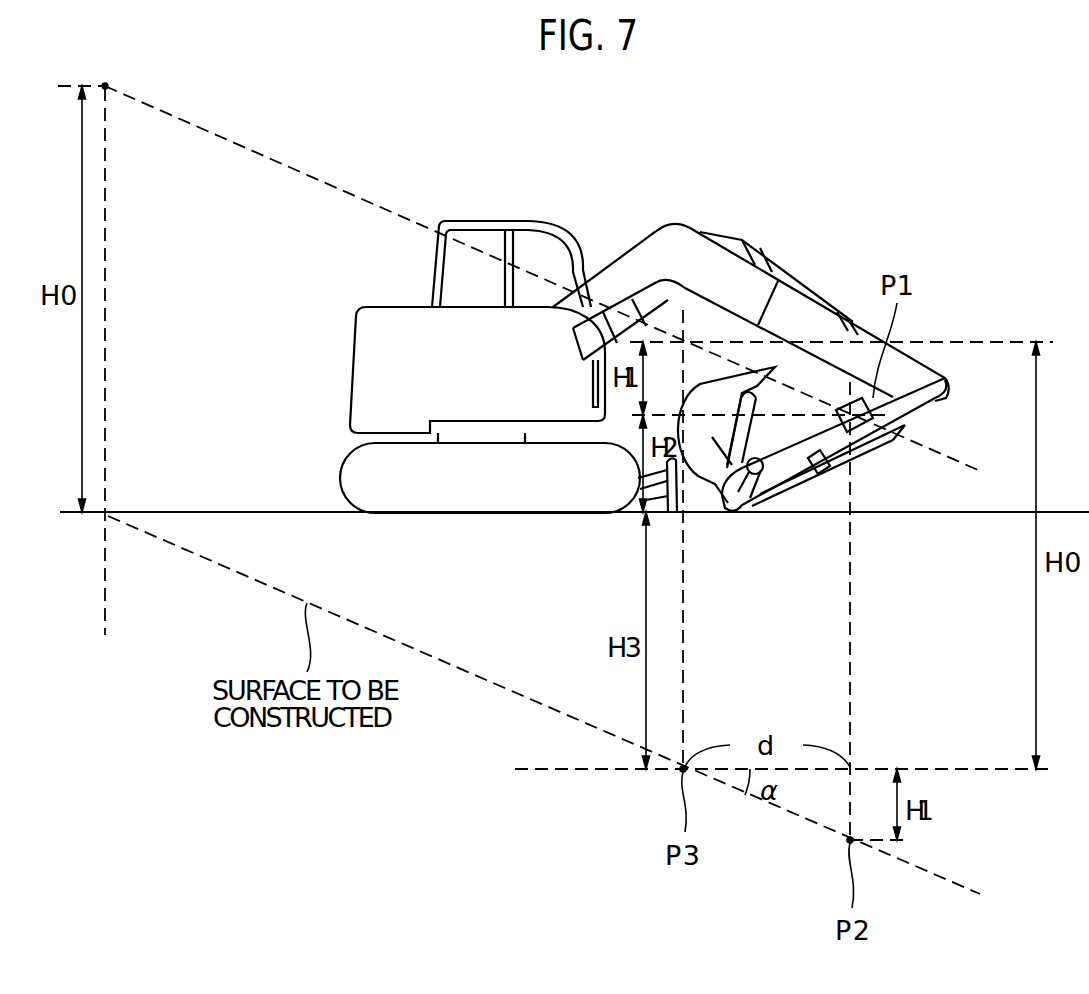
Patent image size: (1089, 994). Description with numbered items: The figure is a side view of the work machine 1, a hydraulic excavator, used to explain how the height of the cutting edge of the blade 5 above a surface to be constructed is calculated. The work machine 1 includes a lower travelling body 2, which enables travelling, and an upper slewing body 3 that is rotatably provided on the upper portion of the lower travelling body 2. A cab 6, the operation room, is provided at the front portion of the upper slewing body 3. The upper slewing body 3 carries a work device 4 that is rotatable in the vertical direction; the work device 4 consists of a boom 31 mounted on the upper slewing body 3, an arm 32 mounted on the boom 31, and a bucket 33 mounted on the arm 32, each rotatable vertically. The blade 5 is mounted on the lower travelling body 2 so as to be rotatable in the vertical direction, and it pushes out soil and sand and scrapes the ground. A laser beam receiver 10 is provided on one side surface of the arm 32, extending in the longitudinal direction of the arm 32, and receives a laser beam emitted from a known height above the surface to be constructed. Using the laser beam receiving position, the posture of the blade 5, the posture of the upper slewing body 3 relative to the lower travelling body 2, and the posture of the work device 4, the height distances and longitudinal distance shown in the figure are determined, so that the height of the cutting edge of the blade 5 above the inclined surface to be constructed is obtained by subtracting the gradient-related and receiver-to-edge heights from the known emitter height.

The work machine 1 is at (353, 257).
The lower travelling body 2 is at (340, 467).
The upper slewing body 3 is at (375, 387).
The work device 4 is at (753, 189).
The blade 5 is at (672, 513).
The cab 6 is at (560, 221).
The laser beam receiver 10 is at (107, 86).
The boom 31 is at (800, 323).
The arm 32 is at (827, 438).
The bucket 33 is at (730, 512).